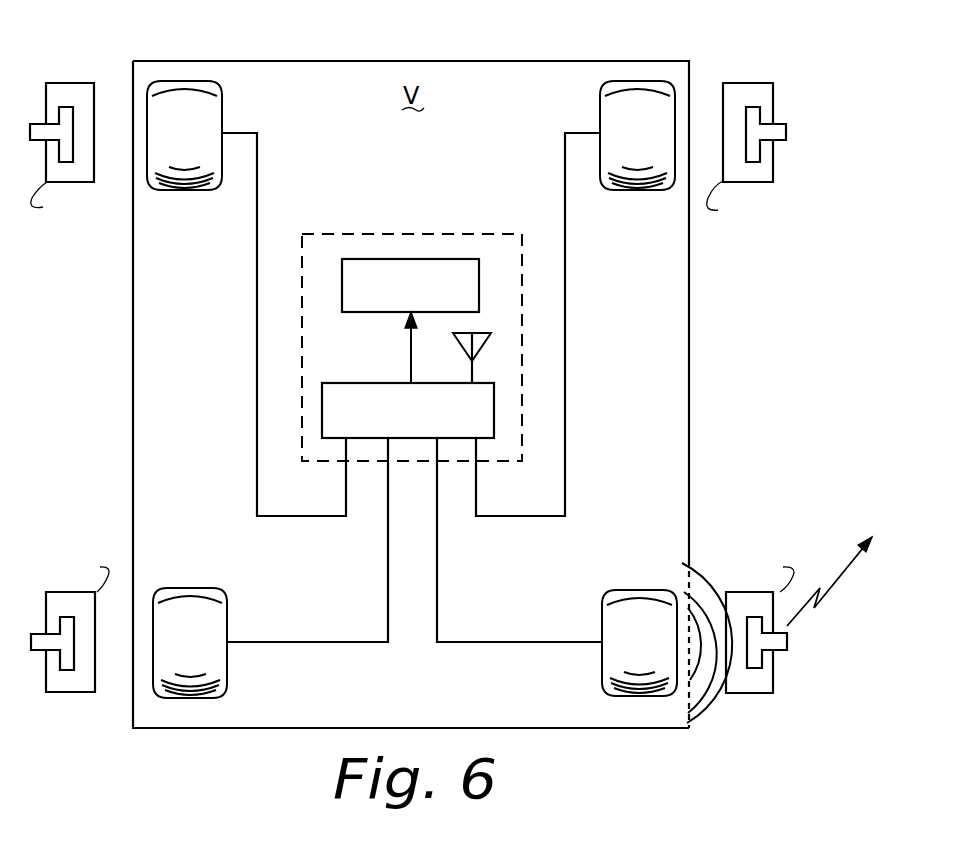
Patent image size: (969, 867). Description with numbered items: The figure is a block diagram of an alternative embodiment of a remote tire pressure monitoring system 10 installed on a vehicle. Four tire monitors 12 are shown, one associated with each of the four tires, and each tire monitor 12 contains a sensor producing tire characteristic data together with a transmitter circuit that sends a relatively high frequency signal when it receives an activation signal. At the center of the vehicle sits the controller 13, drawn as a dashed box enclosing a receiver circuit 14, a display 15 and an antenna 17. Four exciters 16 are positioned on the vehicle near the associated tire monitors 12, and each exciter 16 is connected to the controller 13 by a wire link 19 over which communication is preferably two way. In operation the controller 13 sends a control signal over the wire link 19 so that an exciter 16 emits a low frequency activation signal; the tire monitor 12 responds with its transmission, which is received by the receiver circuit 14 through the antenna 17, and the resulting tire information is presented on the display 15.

The remote tire pressure monitoring system 10 is at (400, 41).
The tire monitor 12 is at (70, 107).
The controller 13 is at (335, 238).
The receiver circuit 14 is at (365, 383).
The display 15 is at (456, 260).
The exciter 16 is at (222, 107).
The antenna 17 is at (465, 358).
The wire link 19 is at (258, 516).